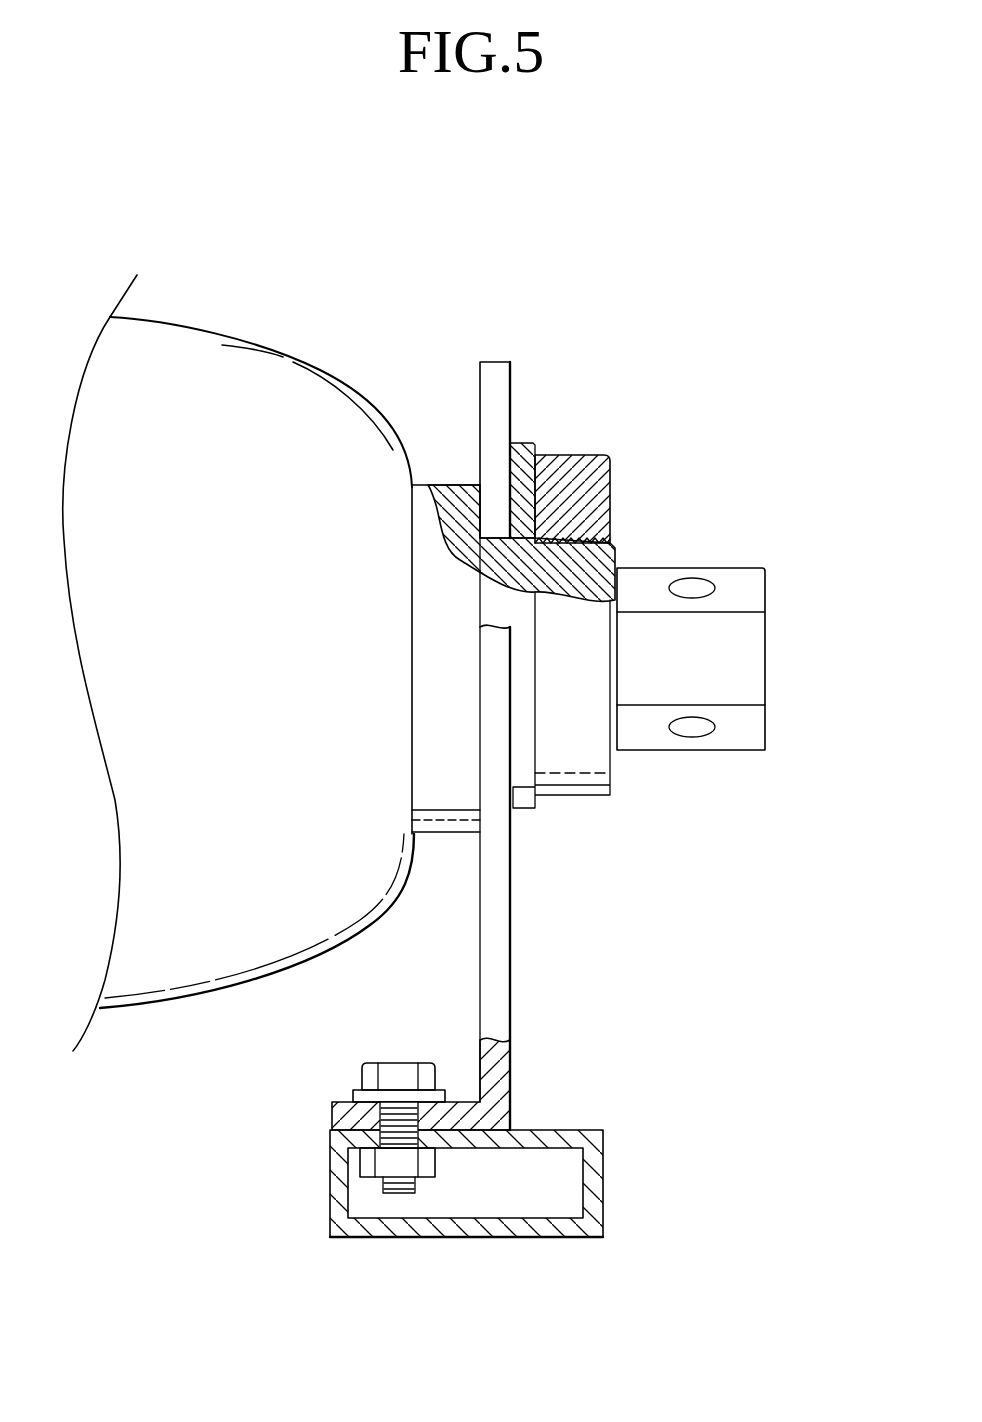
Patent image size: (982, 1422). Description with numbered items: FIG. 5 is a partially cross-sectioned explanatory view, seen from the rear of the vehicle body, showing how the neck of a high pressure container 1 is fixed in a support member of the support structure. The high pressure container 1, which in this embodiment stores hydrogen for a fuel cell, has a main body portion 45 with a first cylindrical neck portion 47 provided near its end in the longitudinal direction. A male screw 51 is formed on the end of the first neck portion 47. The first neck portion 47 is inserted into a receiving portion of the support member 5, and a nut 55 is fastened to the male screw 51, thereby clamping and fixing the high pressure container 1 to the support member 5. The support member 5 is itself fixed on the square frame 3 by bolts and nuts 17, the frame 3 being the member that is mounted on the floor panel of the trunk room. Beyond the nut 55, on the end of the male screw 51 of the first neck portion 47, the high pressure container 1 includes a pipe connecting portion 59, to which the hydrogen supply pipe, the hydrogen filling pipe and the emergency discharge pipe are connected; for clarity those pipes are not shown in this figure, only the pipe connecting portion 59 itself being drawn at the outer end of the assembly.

The high pressure container 1 is at (333, 372).
The main body portion 45 is at (220, 348).
The first cylindrical neck portion 47 is at (440, 485).
The male screw 51 is at (613, 522).
The nut 55 is at (583, 455).
The pipe connecting portion 59 is at (755, 673).
The support member 5 is at (512, 940).
The frame 3 is at (535, 1238).
The bolts and nuts 17 is at (395, 1195).